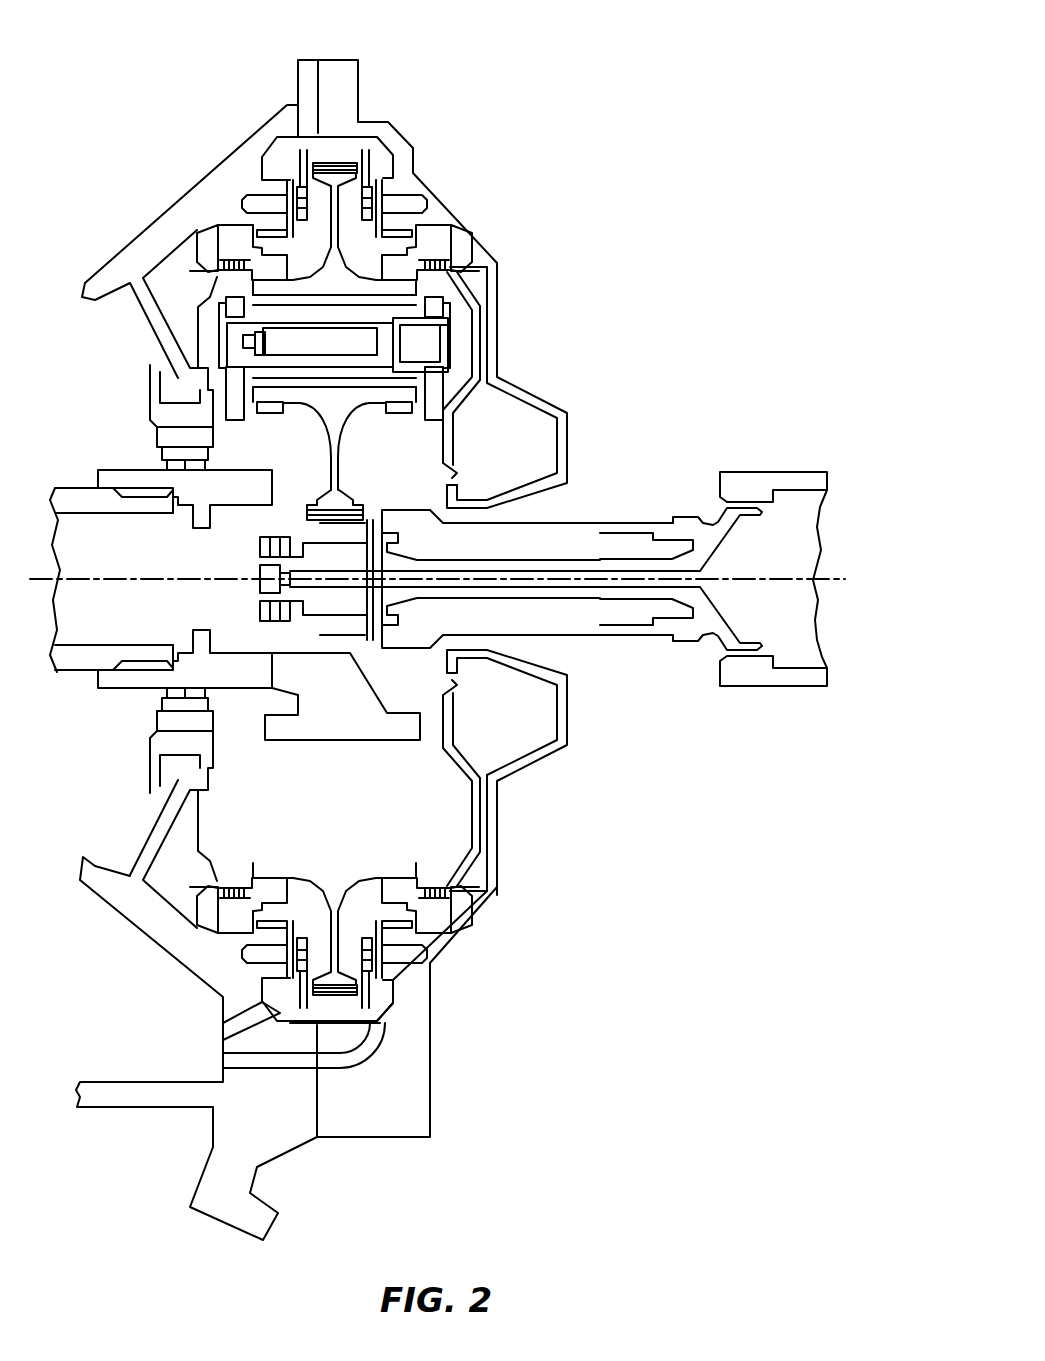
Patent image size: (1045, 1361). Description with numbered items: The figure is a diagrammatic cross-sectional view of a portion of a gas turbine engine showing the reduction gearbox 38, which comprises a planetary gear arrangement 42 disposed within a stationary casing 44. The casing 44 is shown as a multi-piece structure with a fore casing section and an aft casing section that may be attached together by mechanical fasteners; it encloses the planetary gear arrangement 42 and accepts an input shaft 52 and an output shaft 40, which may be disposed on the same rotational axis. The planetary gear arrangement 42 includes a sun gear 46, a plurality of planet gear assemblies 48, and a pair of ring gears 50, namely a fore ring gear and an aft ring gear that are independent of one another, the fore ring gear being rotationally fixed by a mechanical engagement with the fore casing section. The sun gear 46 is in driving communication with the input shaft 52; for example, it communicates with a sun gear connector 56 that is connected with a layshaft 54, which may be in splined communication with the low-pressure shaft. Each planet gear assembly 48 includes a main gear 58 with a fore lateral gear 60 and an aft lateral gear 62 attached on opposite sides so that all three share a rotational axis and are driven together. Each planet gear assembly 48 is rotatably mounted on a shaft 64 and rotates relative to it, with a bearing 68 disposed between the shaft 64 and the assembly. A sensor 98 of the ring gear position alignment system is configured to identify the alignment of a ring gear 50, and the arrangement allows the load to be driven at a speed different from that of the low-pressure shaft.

The reduction gearbox 38 is at (628, 82).
The planetary gear arrangement 42 is at (632, 143).
The casing 44 is at (240, 163).
The sun gear 46 is at (290, 517).
The planet gear assembly 48 is at (482, 324).
The ring gear 50 is at (262, 877).
The input shaft 52 is at (777, 472).
The layshaft 54 is at (605, 520).
The sun gear connector 56 is at (290, 630).
The main gear 58 is at (337, 163).
The fore lateral gear 60 is at (212, 276).
The aft lateral gear 62 is at (448, 278).
The shaft 64 is at (450, 342).
The bearing 68 is at (280, 377).
The sensor 98 is at (460, 437).
The output shaft 40 is at (72, 487).